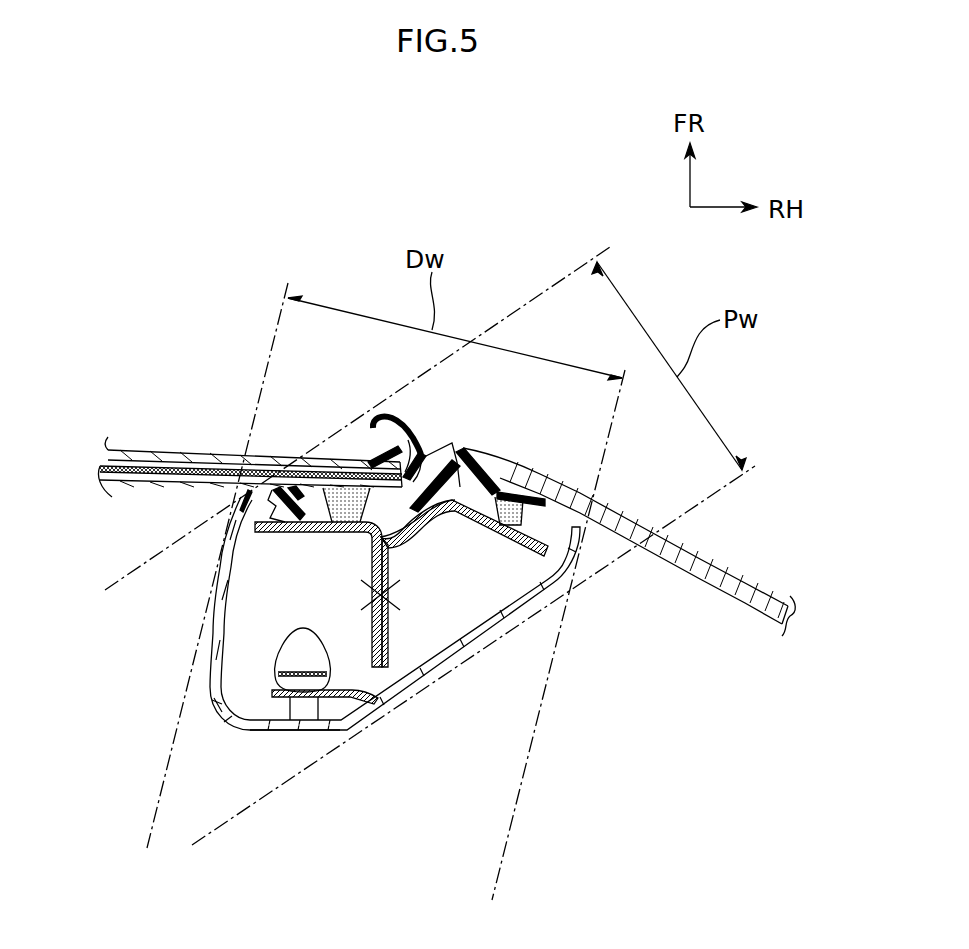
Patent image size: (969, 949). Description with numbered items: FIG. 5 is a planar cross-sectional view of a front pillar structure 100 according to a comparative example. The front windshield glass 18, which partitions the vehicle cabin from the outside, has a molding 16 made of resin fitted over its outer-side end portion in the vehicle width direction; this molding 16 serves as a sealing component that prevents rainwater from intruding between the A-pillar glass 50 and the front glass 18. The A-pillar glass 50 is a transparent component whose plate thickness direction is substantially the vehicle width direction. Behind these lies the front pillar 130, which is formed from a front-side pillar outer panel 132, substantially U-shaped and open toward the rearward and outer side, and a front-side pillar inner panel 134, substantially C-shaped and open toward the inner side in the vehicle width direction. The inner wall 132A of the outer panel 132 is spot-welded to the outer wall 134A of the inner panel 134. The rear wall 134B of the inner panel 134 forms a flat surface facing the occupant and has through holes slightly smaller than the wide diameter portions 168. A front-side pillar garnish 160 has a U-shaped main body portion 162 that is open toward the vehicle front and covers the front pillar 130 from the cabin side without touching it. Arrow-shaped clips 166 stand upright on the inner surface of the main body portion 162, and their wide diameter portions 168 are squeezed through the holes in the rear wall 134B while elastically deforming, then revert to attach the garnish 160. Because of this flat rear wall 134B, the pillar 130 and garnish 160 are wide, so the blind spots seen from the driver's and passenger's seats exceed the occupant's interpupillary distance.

The molding 16 is at (425, 447).
The front windshield glass 18 is at (160, 450).
The A-pillar glass 50 is at (728, 569).
The front pillar structure 100 is at (182, 644).
The front pillar 130 is at (357, 698).
The front-side pillar outer panel 132 is at (420, 532).
The inner wall 132A is at (390, 644).
The front-side pillar inner panel 134 is at (393, 707).
The outer wall 134A is at (370, 647).
The rear wall 134B is at (282, 703).
The front-side pillar garnish 160 is at (233, 728).
The main body portion 162 is at (243, 732).
The clip 166 is at (297, 644).
The wide diameter portion 168 is at (282, 677).